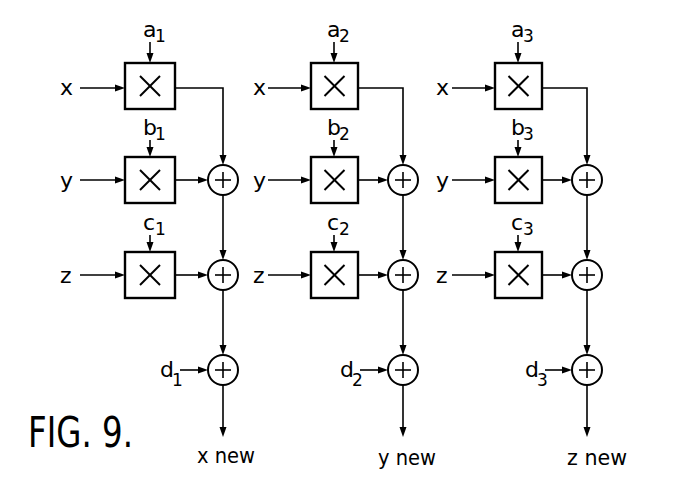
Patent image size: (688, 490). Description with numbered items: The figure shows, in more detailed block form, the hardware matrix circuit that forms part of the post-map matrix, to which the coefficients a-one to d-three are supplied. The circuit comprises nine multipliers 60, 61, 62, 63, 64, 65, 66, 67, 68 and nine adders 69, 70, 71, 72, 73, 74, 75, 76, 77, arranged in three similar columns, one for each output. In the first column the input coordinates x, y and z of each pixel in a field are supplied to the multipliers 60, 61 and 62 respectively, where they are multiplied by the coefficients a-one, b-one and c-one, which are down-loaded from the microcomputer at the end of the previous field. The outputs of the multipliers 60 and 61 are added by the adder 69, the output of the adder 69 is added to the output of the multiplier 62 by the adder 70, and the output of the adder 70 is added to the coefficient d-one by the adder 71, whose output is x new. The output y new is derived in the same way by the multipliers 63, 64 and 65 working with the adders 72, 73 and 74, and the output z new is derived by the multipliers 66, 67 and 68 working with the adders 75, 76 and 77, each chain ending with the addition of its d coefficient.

The multiplier 60 is at (176, 72).
The multiplier 61 is at (176, 160).
The multiplier 62 is at (176, 255).
The multiplier 63 is at (359, 72).
The multiplier 64 is at (359, 160).
The multiplier 65 is at (359, 255).
The multiplier 66 is at (543, 72).
The multiplier 67 is at (543, 160).
The multiplier 68 is at (543, 255).
The adder 69 is at (233, 169).
The adder 70 is at (234, 265).
The adder 71 is at (234, 360).
The adder 72 is at (413, 169).
The adder 73 is at (414, 265).
The adder 74 is at (414, 360).
The adder 75 is at (597, 169).
The adder 76 is at (598, 265).
The adder 77 is at (598, 360).